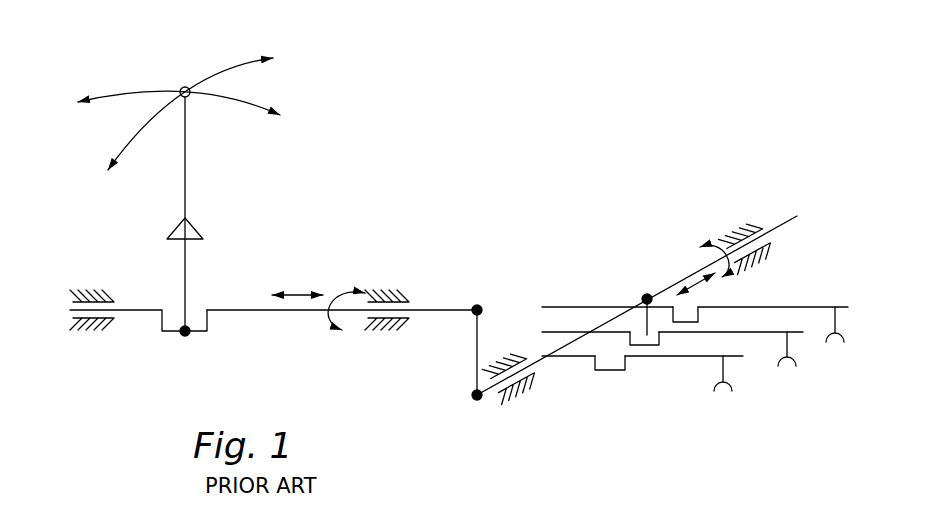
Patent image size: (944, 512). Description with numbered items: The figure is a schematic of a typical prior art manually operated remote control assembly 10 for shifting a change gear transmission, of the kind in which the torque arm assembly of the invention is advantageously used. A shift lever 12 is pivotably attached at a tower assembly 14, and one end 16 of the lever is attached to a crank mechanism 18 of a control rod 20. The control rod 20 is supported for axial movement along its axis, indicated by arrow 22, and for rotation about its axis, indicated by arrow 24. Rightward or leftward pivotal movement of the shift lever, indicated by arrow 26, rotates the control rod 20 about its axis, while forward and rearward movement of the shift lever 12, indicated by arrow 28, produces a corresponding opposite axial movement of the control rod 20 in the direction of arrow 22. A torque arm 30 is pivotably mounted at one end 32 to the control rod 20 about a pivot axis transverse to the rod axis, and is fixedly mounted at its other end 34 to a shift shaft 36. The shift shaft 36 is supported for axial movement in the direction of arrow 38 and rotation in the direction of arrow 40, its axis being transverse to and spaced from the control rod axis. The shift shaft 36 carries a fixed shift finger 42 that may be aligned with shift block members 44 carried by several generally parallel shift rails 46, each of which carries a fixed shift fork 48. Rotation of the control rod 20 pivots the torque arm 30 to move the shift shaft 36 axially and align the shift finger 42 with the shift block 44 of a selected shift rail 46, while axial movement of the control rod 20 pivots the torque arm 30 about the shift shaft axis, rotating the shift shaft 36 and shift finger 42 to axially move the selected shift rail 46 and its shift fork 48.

The remote control assembly 10 is at (455, 203).
The shift lever 12 is at (193, 168).
The tower assembly 14 is at (198, 230).
The one end of shift lever 16 is at (187, 328).
The crank mechanism 18 is at (160, 329).
The control rod 20 is at (266, 312).
The arrow indicating axial movement of control rod 22 is at (300, 292).
The arrow indicating rotation of control rod 24 is at (344, 288).
The arrow indicating rightward or leftward pivotal movement of shift lever 26 is at (230, 70).
The arrow indicating forward and rearward movement of shift lever 28 is at (118, 92).
The torque arm 30 is at (484, 362).
The one end of torque arm 32 is at (478, 305).
The other end of torque arm 34 is at (470, 399).
The shift shaft 36 is at (796, 215).
The arrow indicating axial movement of shift shaft 38 is at (696, 285).
The arrow indicating rotation of shift shaft 40 is at (718, 244).
The shift finger 42 is at (647, 322).
The shift block members 44 is at (690, 323).
The shift rails 46 is at (774, 306).
The shift fork 48 is at (716, 388).